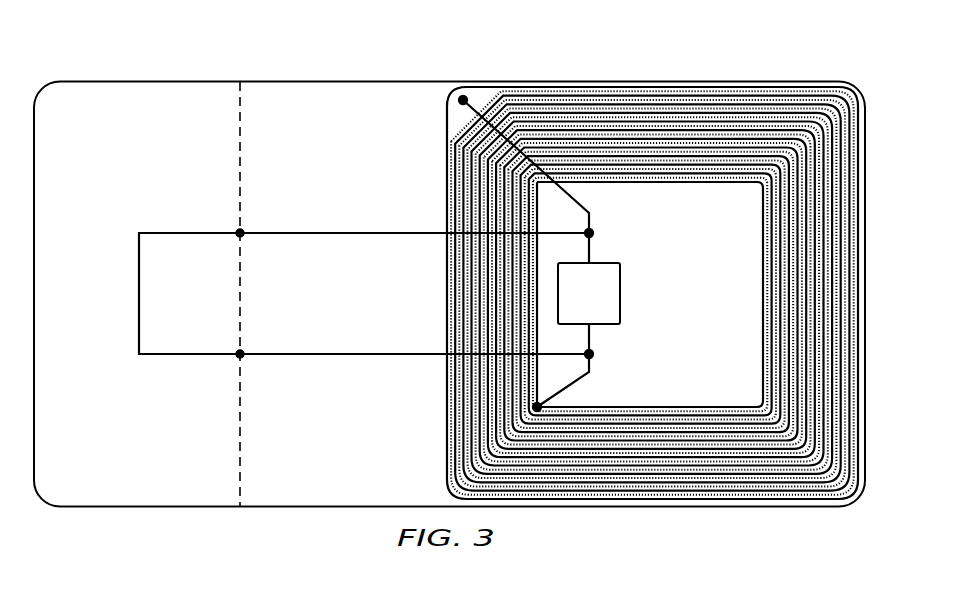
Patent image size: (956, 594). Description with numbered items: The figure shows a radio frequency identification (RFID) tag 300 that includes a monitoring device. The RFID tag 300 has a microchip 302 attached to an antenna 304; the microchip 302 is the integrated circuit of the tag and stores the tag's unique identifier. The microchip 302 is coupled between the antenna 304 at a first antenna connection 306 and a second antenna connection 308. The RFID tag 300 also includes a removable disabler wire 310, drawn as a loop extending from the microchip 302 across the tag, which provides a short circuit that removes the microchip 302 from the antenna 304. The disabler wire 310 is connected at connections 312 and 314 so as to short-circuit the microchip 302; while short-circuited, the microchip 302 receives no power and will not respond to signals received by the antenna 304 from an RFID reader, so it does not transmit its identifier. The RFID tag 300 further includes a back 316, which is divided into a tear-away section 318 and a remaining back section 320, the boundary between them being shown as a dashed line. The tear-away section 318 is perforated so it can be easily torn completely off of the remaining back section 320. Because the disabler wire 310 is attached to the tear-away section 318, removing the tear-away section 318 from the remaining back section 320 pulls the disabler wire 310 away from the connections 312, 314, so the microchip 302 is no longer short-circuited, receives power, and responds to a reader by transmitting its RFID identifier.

The radio frequency identification (RFID) tag 300 is at (190, 58).
The microchip 302 is at (608, 307).
The antenna 304 is at (447, 193).
The first antenna connection 306 is at (460, 101).
The second antenna connection 308 is at (545, 389).
The removable disabler wire 310 is at (182, 226).
The connection 312 is at (242, 231).
The connection 314 is at (242, 357).
The back 316 is at (239, 525).
The tear-away section 318 is at (154, 445).
The remaining back section 320 is at (365, 445).